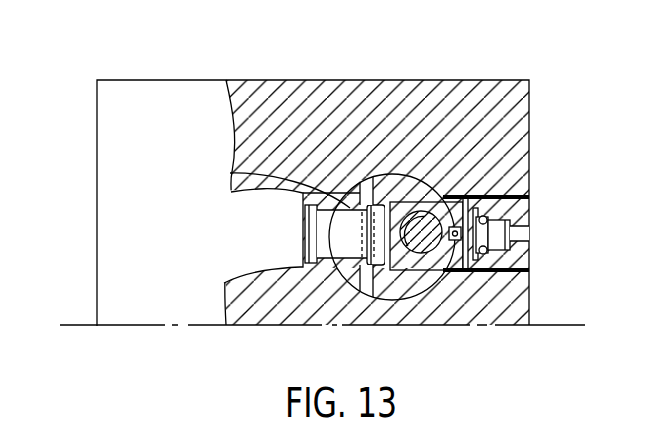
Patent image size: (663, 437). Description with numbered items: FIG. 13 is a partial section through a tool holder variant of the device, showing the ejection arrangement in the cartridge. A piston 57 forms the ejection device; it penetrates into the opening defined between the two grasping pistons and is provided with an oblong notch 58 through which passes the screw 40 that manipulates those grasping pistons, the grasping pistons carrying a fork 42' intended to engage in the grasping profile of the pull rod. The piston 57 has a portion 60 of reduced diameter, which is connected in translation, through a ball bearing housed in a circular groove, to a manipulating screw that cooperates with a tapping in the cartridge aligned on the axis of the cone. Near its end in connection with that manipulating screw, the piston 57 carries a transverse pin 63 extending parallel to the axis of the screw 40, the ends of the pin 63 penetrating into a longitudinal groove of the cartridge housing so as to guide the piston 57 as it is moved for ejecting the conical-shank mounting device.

The fork 42' is at (271, 220).
The transverse pin 63 is at (465, 195).
The portion of reduced diameter 60 is at (512, 210).
The piston 57 is at (400, 260).
The oppositely threaded screw 40 is at (415, 253).
The oblong notch 58 is at (447, 248).